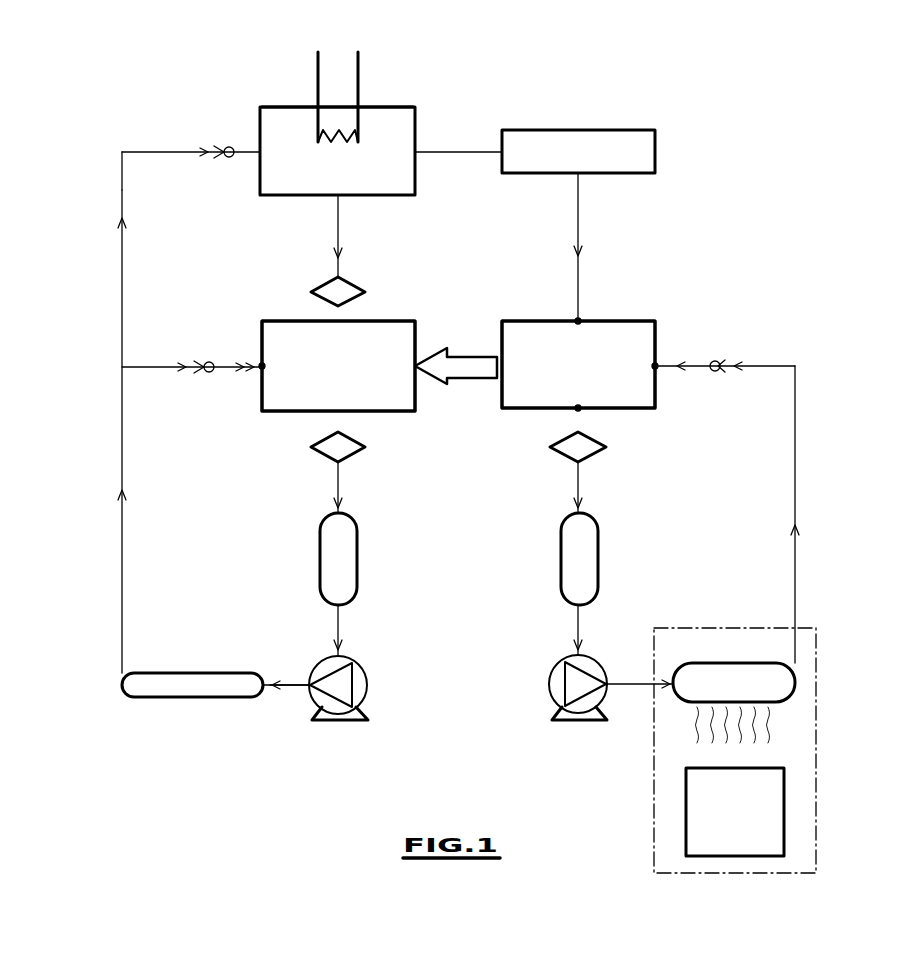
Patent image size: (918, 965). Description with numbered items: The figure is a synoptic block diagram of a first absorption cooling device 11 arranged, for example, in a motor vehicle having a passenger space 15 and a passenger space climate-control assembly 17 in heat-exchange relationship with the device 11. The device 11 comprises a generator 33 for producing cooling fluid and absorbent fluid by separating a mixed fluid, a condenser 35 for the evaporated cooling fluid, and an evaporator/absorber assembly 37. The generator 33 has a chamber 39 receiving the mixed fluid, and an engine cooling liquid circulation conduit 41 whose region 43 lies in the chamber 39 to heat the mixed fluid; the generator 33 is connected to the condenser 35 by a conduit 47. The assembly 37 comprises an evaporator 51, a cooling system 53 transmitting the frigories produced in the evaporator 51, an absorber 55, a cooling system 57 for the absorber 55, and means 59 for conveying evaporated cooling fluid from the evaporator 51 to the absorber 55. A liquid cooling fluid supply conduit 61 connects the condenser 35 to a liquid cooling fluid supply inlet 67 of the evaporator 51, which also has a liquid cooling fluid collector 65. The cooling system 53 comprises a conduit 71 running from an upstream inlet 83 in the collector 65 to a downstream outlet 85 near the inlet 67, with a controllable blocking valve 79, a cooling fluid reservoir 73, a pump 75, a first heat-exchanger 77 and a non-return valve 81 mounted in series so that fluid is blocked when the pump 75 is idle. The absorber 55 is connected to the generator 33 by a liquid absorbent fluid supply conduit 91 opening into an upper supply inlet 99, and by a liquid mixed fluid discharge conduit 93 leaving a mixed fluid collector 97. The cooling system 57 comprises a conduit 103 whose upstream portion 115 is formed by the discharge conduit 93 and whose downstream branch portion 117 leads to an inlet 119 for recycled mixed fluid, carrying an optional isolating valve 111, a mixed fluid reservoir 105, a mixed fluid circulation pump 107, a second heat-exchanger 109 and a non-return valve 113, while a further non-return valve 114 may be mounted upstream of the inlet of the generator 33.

The absorption cooling device 11 is at (481, 72).
The passenger space 15 is at (702, 627).
The passenger space climate-control assembly 17 is at (696, 822).
The generator 33 is at (287, 102).
The condenser 35 is at (614, 138).
The evaporator/absorber assembly 37 is at (642, 292).
The chamber 39 is at (275, 118).
The engine cooling liquid circulation conduit 41 is at (368, 75).
The region 43 is at (326, 142).
The conduit 47 is at (460, 154).
The evaporator 51 is at (656, 328).
The cooling system 53 is at (808, 480).
The absorber 55 is at (398, 399).
The cooling system 57 is at (105, 550).
The means for conveying evaporated cooling fluid 59 is at (468, 360).
The liquid cooling fluid supply conduit 61 is at (580, 228).
The liquid cooling fluid collector 65 is at (538, 393).
The liquid cooling fluid supply inlet 67 is at (576, 318).
The conduit 71 is at (576, 488).
The cooling fluid reservoir 73 is at (572, 558).
The pump 75 is at (560, 672).
The first heat-exchanger 77 is at (683, 692).
The controllable blocking valve 79 is at (590, 456).
The non-return valve 81 is at (718, 372).
The upstream inlet 83 is at (585, 411).
The downstream outlet 85 is at (660, 368).
The liquid absorbent fluid supply conduit 91 is at (340, 228).
The liquid mixed fluid discharge conduit 93 is at (122, 188).
The mixed fluid collector 97 is at (283, 400).
The upper supply inlet 99 is at (345, 312).
The conduit 103 is at (132, 612).
The mixed fluid reservoir 105 is at (343, 568).
The mixed fluid circulation pump 107 is at (362, 685).
The second heat-exchanger 109 is at (185, 688).
The valve 111 is at (350, 455).
The non-return valve 113 is at (208, 374).
The non-return valve 114 is at (230, 158).
The upstream portion 115 is at (122, 466).
The downstream branch portion 117 is at (146, 370).
The inlet 119 is at (268, 366).